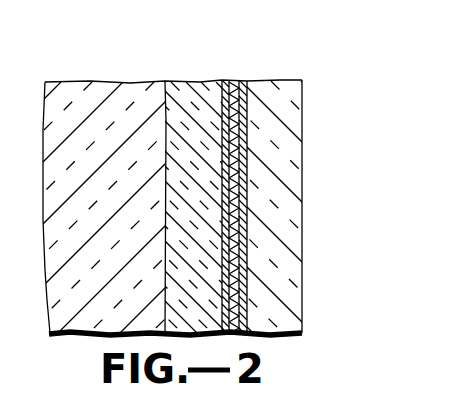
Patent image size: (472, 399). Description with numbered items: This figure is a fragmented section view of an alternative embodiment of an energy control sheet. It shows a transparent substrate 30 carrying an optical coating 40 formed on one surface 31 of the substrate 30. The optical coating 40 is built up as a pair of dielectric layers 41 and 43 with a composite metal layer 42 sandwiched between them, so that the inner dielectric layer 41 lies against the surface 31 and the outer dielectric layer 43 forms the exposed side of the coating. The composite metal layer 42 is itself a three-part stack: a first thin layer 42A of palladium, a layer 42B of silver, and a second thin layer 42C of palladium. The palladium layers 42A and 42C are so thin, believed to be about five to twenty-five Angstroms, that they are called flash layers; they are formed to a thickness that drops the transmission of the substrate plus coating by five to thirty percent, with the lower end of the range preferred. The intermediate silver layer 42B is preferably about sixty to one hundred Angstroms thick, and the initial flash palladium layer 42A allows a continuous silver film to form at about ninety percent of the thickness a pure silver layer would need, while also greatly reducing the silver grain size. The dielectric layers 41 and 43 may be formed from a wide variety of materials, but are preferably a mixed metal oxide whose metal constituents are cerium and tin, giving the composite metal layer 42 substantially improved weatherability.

The transparent substrate 30 is at (95, 88).
The surface of substrate 31 is at (165, 84).
The optical coating 40 is at (212, 64).
The dielectric layer 41 is at (182, 88).
The composite metal layer 42 is at (292, 184).
The first thin layer of palladium 42A is at (226, 80).
The layer of silver 42B is at (237, 115).
The second thin layer of palladium 42C is at (245, 133).
The dielectric layer 43 is at (295, 188).